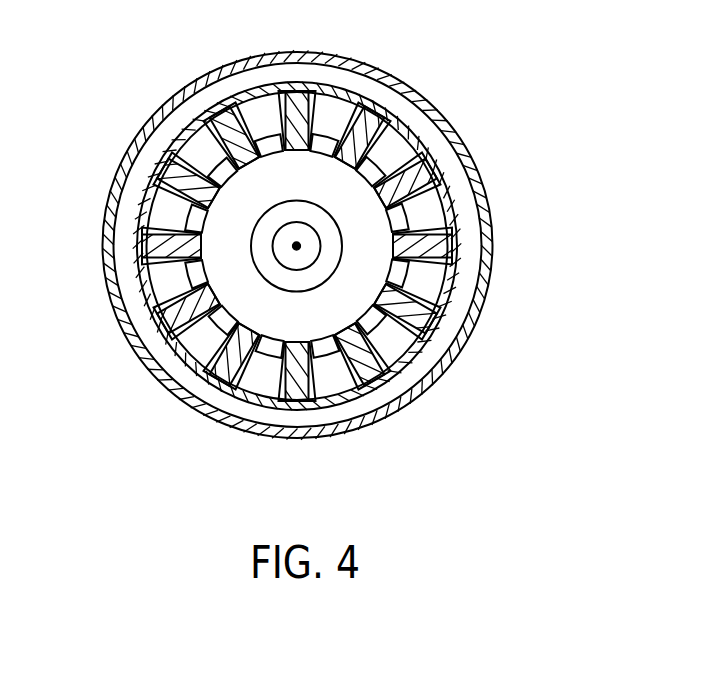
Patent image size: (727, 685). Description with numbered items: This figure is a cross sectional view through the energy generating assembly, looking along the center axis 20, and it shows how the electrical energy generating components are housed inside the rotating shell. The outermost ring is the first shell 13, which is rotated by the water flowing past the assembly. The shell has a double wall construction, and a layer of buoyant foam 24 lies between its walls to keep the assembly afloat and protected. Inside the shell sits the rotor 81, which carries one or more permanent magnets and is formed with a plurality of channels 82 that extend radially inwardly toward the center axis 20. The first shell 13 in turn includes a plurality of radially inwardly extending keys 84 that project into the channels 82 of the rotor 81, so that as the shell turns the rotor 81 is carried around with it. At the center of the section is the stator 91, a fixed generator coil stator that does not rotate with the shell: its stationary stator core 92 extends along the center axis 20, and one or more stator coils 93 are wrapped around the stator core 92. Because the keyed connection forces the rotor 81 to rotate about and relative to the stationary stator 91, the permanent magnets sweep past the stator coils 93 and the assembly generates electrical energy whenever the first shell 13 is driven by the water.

The first shell 13 is at (311, 245).
The center axis 20 is at (297, 246).
The buoyant foam 24 is at (311, 255).
The rotor 81 is at (276, 256).
The channels 82 is at (338, 126).
The keys 84 is at (368, 118).
The stator 91 is at (379, 347).
The stator core 92 is at (251, 360).
The stator coils 93 is at (306, 283).